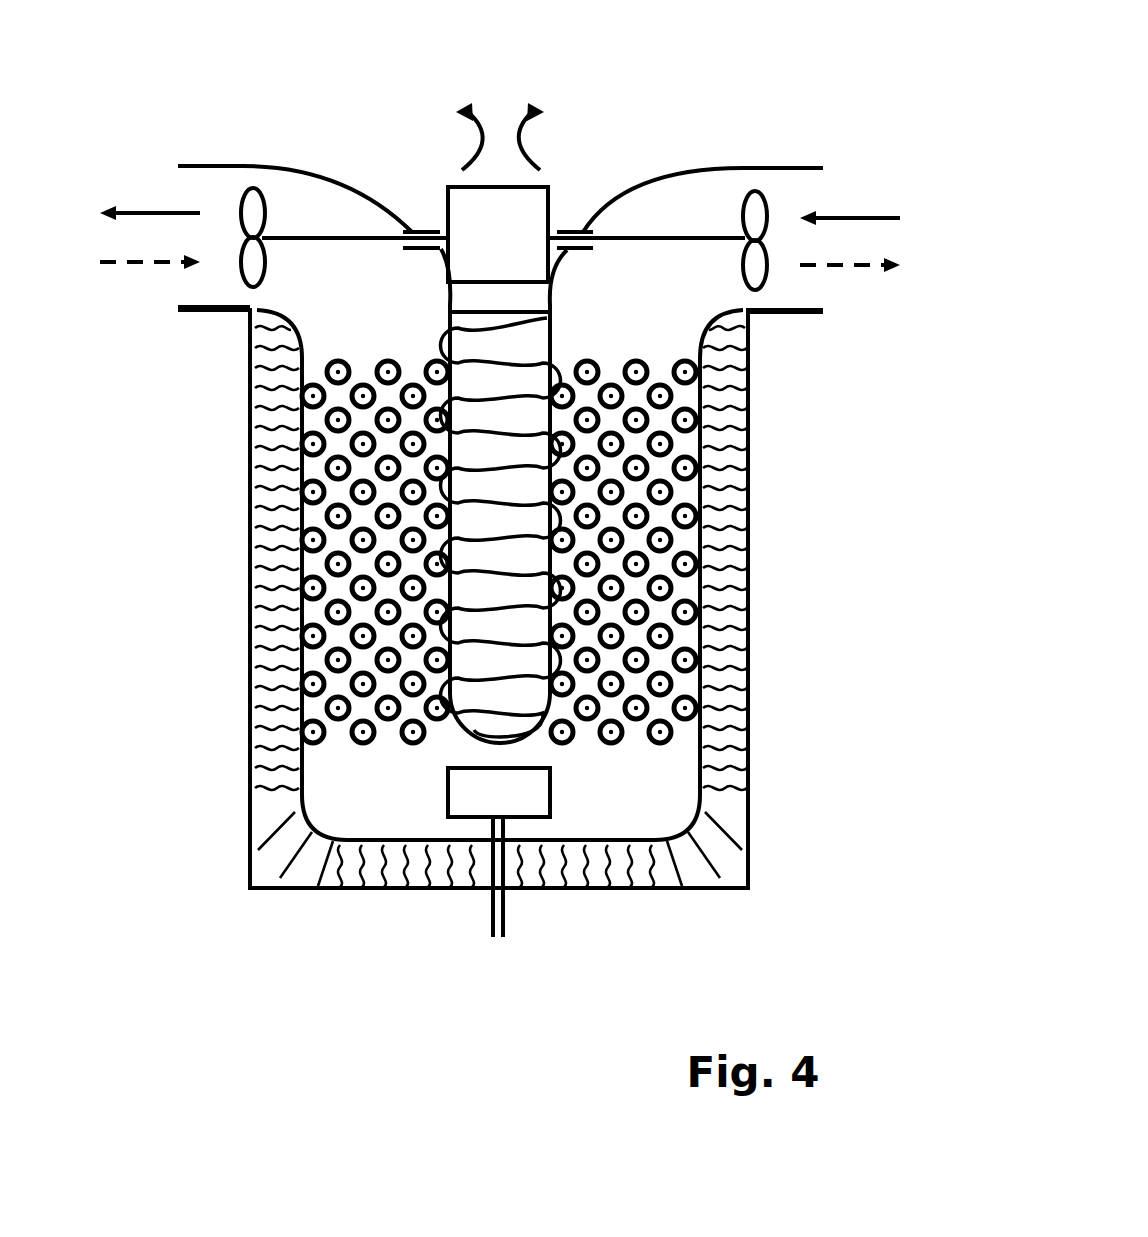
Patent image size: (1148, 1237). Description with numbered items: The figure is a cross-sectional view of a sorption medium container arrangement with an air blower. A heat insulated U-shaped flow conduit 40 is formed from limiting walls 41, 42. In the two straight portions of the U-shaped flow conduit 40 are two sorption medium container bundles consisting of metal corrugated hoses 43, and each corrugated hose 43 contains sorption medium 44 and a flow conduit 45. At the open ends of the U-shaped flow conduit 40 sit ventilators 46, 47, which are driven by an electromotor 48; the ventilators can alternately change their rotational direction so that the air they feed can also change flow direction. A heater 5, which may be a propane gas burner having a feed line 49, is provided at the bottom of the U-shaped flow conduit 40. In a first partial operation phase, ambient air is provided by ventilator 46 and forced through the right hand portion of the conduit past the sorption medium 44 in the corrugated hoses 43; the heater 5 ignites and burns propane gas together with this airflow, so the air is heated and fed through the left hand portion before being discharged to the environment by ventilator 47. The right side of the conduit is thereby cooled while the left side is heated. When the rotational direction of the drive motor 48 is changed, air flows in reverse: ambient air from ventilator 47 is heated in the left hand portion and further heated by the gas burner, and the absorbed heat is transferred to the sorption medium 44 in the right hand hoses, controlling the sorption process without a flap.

The heater 5 is at (547, 820).
The U-shaped flow conduit 40 is at (598, 770).
The limiting wall 41 is at (702, 645).
The limiting wall 42 is at (553, 523).
The metal corrugated hose 43 is at (300, 383).
The sorption medium 44 is at (702, 568).
The flow conduit 45 is at (645, 712).
The ventilator 46 is at (757, 213).
The ventilator 47 is at (254, 213).
The electromotor 48 is at (492, 217).
The feed line 49 is at (497, 903).